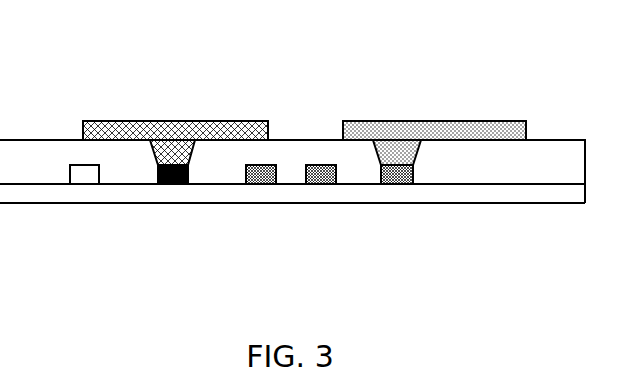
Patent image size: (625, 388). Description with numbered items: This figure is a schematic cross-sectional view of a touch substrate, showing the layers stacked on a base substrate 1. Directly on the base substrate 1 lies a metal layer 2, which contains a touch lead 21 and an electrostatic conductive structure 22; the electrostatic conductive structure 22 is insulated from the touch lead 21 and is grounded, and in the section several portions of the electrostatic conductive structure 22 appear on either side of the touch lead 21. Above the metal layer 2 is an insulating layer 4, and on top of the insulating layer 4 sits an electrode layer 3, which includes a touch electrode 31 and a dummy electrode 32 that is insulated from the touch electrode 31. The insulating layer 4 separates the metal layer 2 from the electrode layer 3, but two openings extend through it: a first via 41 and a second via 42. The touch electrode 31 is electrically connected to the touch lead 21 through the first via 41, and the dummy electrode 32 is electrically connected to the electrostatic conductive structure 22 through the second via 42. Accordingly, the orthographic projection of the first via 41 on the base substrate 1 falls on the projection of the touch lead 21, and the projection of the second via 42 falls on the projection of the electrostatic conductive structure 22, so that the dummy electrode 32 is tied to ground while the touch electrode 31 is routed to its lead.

The base substrate 1 is at (555, 192).
The metal layer 2 is at (240, 242).
The touch lead 21 is at (173, 184).
The electrostatic conductive structure 22 is at (397, 225).
The electrode layer 3 is at (304, 74).
The touch electrode 31 is at (232, 140).
The dummy electrode 32 is at (356, 122).
The insulating layer 4 is at (26, 162).
The first via 41 is at (162, 140).
The second via 42 is at (408, 122).